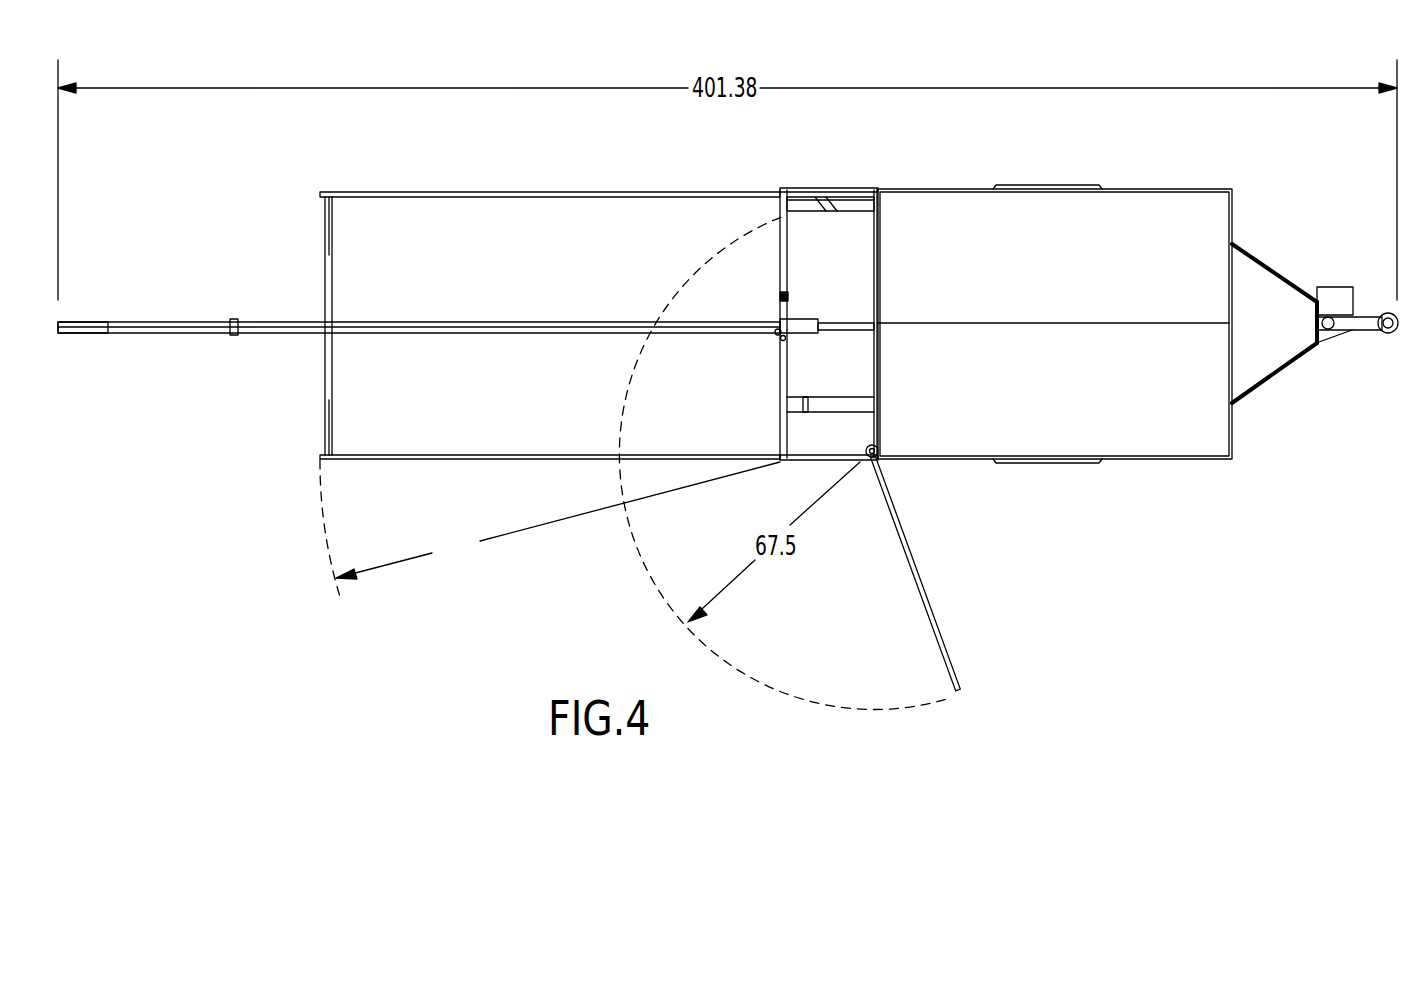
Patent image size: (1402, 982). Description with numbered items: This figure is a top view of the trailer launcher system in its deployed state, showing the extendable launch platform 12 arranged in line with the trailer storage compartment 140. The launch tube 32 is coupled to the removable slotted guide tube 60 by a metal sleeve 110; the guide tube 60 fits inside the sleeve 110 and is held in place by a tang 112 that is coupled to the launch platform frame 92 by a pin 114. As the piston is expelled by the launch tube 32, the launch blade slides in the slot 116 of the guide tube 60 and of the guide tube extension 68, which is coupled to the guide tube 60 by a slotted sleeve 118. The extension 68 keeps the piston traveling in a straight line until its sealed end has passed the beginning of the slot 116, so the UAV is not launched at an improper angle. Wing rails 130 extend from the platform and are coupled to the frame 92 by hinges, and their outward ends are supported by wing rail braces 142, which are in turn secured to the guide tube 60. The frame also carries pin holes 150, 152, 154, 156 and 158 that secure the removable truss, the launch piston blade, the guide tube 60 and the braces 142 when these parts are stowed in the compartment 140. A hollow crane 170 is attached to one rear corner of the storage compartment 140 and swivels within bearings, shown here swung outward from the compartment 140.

The extendable launch platform 12 is at (386, 162).
The launch tube 32 is at (860, 322).
The slotted guide tube 60 is at (454, 322).
The guide tube extension 68 is at (103, 334).
The launch platform frame 92 is at (778, 424).
The metal sleeve 110 is at (808, 334).
The tang 112 is at (775, 334).
The pin 114 is at (781, 340).
The slot 116 is at (565, 322).
The slotted sleeve 118 is at (233, 319).
The wing rails 130 is at (500, 192).
The trailer storage compartment 140 is at (1170, 465).
The wing rail braces 142 is at (325, 270).
The pin hole 150 is at (803, 207).
The pin hole 152 is at (780, 270).
The pin hole 154 is at (787, 297).
The pin hole 156 is at (805, 397).
The pin hole 158 is at (805, 412).
The hollow crane 170 is at (940, 632).